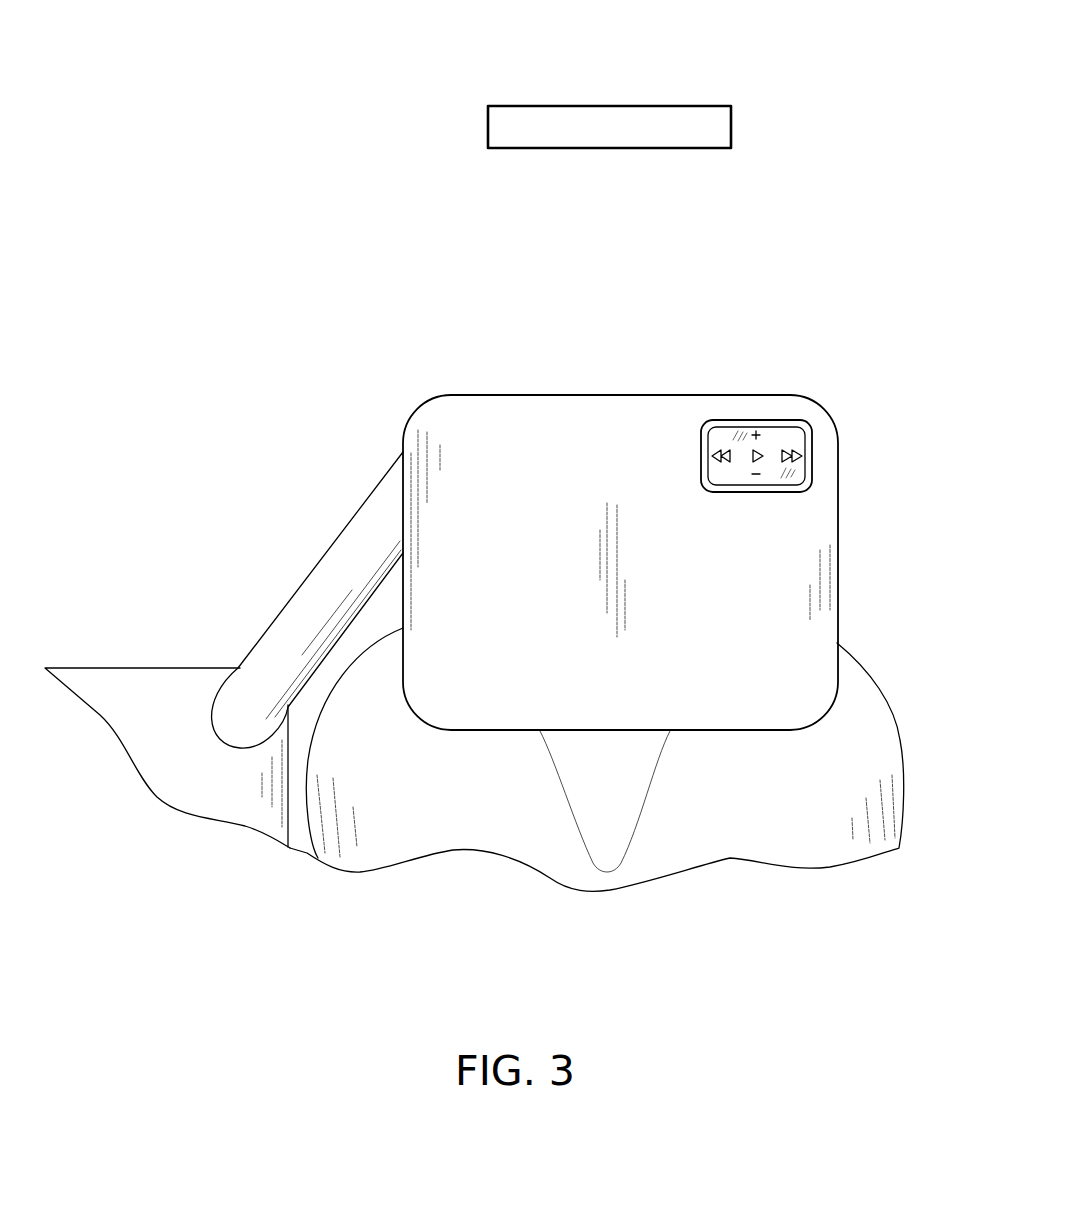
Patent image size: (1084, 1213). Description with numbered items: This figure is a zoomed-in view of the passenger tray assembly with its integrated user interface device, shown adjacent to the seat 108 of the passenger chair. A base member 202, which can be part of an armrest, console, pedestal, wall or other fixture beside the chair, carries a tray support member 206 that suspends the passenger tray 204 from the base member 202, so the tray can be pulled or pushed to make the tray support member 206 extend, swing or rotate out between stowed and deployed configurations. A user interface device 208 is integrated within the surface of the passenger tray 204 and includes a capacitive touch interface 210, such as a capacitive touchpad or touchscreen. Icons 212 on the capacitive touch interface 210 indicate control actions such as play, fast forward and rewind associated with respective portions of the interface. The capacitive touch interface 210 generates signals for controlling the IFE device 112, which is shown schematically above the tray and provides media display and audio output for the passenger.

The IFE device 112 is at (682, 105).
The seat 108 is at (867, 732).
The base member 202 is at (129, 673).
The passenger tray 204 is at (795, 588).
The tray support member 206 is at (327, 573).
The user interface device 208 is at (810, 440).
The capacitive touch interface 210 is at (797, 472).
The icons 212 is at (765, 440).